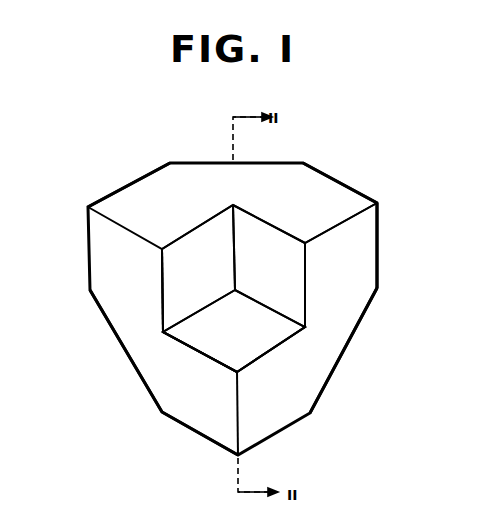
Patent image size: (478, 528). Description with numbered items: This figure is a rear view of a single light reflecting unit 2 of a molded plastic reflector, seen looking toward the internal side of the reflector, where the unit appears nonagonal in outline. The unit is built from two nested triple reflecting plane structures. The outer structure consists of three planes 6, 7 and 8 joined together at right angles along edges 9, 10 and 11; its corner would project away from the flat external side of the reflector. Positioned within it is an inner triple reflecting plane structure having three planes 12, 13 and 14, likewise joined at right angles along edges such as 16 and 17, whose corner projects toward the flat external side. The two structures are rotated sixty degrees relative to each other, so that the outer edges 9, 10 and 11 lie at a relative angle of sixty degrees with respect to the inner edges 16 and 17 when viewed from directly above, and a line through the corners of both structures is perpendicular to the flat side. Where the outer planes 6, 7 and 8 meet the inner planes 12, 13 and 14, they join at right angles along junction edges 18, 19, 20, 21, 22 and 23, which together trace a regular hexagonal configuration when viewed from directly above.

The light reflecting unit 2 is at (206, 156).
The plane 6 is at (305, 177).
The plane 7 is at (347, 338).
The plane 8 is at (140, 347).
The edge 9 is at (357, 214).
The edge 10 is at (237, 423).
The edge 11 is at (117, 225).
The plane 12 is at (295, 252).
The plane 13 is at (197, 342).
The plane 14 is at (170, 268).
The edge 16 is at (197, 312).
The edge 17 is at (233, 237).
The junction edge 18 is at (278, 228).
The junction edge 19 is at (307, 265).
The junction edge 20 is at (257, 362).
The junction edge 21 is at (205, 357).
The junction edge 22 is at (162, 287).
The junction edge 23 is at (180, 237).